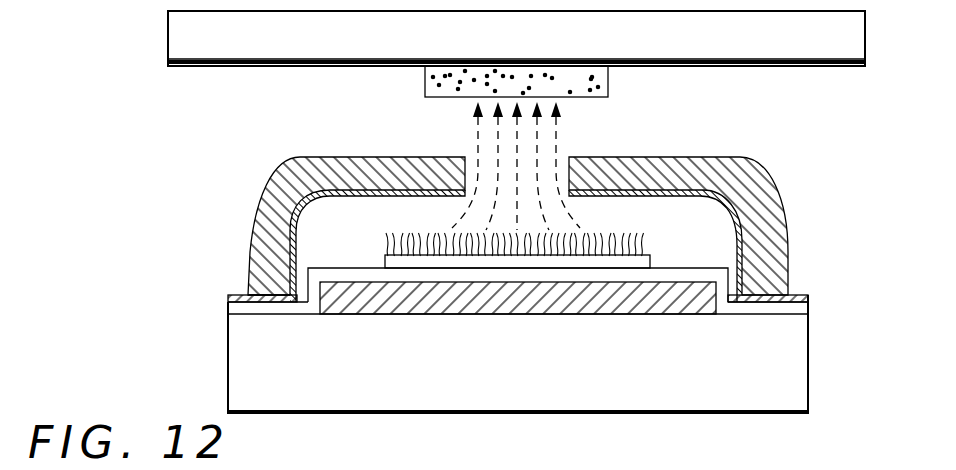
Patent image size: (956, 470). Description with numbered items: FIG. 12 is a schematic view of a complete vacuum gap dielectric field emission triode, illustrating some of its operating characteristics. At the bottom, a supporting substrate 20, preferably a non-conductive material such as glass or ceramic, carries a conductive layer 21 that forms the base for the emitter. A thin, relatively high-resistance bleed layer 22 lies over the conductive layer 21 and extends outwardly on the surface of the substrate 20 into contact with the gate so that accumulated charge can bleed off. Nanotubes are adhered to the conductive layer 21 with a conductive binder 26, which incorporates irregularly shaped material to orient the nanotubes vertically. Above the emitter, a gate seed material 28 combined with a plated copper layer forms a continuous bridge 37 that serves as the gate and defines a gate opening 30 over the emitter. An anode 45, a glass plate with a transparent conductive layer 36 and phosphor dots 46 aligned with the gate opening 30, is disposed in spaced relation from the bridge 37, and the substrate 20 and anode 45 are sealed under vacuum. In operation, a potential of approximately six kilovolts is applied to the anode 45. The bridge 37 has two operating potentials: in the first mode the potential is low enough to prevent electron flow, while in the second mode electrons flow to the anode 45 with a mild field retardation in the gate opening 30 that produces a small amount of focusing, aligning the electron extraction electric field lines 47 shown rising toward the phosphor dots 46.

The supporting substrate 20 is at (796, 362).
The conductive layer 21 is at (665, 294).
The bleed layer 22 is at (806, 299).
The conductive binder 26 is at (387, 263).
The gate seed material 28 is at (580, 192).
The gate opening 30 is at (470, 158).
The transparent conductive layer 36 is at (222, 66).
The bridge 37 is at (753, 212).
The anode 45 is at (180, 44).
The phosphor dots 46 is at (436, 90).
The electron extraction electric field lines 47 is at (557, 136).